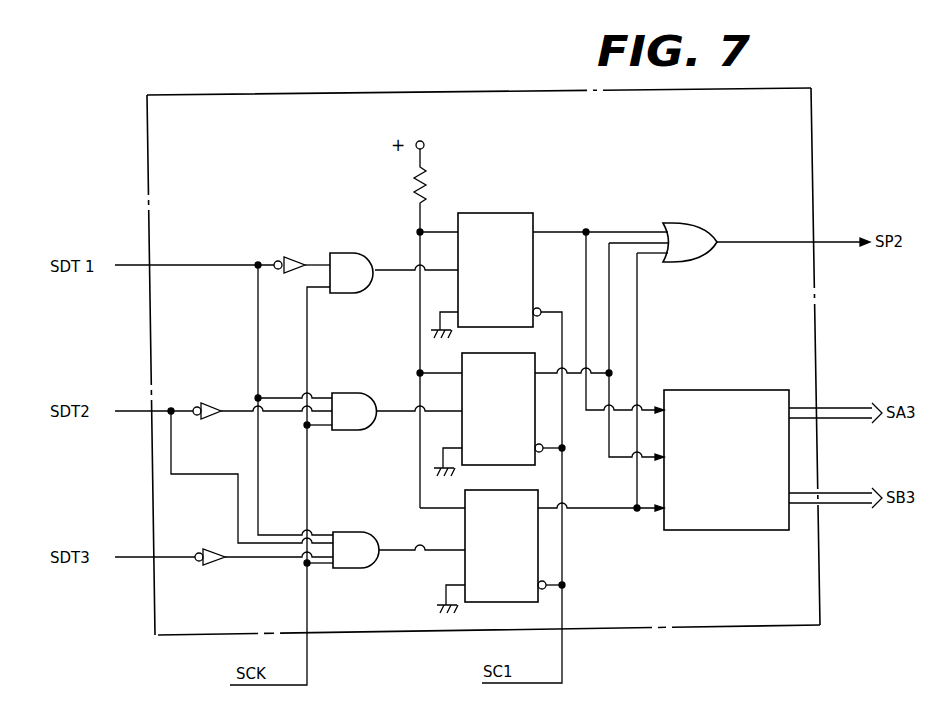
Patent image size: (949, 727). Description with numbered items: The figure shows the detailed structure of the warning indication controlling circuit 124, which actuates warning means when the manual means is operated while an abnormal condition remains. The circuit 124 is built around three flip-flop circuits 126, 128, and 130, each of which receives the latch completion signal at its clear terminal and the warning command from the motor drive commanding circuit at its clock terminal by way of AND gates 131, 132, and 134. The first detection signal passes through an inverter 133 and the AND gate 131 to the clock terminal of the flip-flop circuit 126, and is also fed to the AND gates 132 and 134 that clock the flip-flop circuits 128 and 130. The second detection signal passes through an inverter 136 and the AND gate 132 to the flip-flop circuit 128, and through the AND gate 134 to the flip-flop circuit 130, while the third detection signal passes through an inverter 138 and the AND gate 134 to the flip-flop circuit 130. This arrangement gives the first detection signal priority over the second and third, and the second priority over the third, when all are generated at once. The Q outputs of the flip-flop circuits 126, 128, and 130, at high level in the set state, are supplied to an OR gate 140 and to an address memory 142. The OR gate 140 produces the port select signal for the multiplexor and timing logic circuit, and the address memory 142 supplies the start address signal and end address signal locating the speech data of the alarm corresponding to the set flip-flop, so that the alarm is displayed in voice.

The warning indication controlling circuit 124 is at (147, 163).
The flip-flop circuit 126 is at (498, 213).
The flip-flop circuit 128 is at (460, 366).
The flip-flop circuit 130 is at (538, 546).
The AND gate 131 is at (349, 260).
The AND gate 132 is at (346, 430).
The inverter 133 is at (293, 257).
The AND gate 134 is at (349, 568).
The inverter 136 is at (206, 404).
The inverter 138 is at (207, 549).
The OR gate 140 is at (701, 252).
The address memory 142 is at (722, 390).